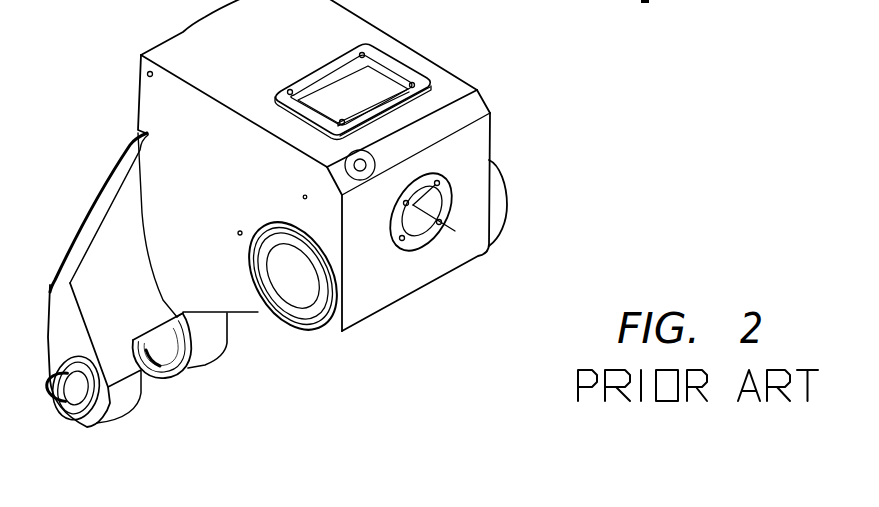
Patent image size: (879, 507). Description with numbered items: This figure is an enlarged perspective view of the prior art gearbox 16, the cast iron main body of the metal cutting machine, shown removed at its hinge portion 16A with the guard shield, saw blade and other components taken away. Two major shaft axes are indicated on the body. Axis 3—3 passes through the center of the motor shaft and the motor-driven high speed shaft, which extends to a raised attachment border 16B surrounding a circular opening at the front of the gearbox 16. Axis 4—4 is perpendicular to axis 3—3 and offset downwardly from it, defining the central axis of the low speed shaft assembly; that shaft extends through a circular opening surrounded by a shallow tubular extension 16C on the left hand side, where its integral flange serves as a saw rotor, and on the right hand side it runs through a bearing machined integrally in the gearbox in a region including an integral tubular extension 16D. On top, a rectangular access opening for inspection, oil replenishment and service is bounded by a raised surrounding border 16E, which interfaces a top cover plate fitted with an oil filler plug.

The gearbox 16 is at (225, 177).
The hinge portion 16A is at (138, 296).
The raised attachment border 16B is at (413, 246).
The shallow tubular extension 16C is at (312, 335).
The integral tubular extension 16D is at (502, 221).
The raised surrounding border 16E is at (402, 67).
The axis 3— 3 is at (157, 44).
The axis 4— 4 is at (490, 168).